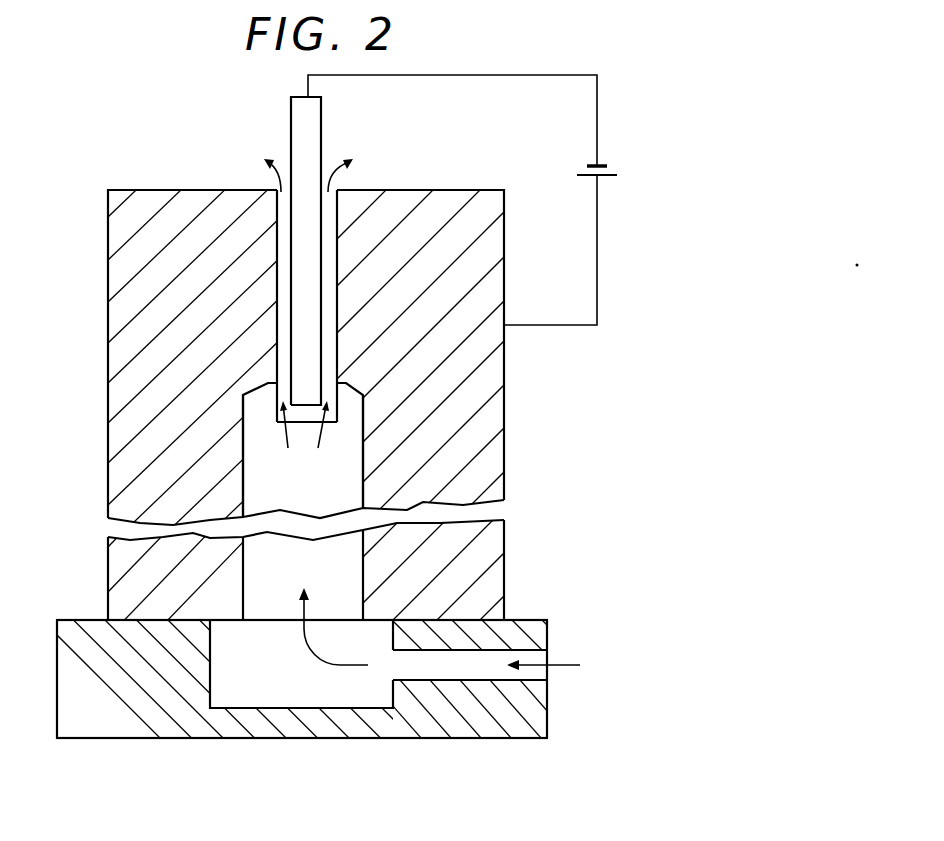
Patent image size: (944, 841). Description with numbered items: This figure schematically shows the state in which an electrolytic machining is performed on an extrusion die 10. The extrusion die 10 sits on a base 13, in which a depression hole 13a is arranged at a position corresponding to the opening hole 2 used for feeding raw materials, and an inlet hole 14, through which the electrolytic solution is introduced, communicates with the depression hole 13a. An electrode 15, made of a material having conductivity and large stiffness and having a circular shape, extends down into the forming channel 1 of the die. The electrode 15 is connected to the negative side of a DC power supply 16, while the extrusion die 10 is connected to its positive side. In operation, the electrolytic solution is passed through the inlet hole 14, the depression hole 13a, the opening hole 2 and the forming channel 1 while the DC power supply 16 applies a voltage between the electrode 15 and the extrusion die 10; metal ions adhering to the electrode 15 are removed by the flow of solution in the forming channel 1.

The forming channel 1 is at (283, 230).
The opening hole 2 is at (262, 488).
The extrusion die 10 is at (497, 405).
The base 13 is at (522, 633).
The depression hole 13a is at (247, 705).
The inlet hole 14 is at (445, 670).
The electrode 15 is at (297, 317).
The DC power supply 16 is at (615, 168).